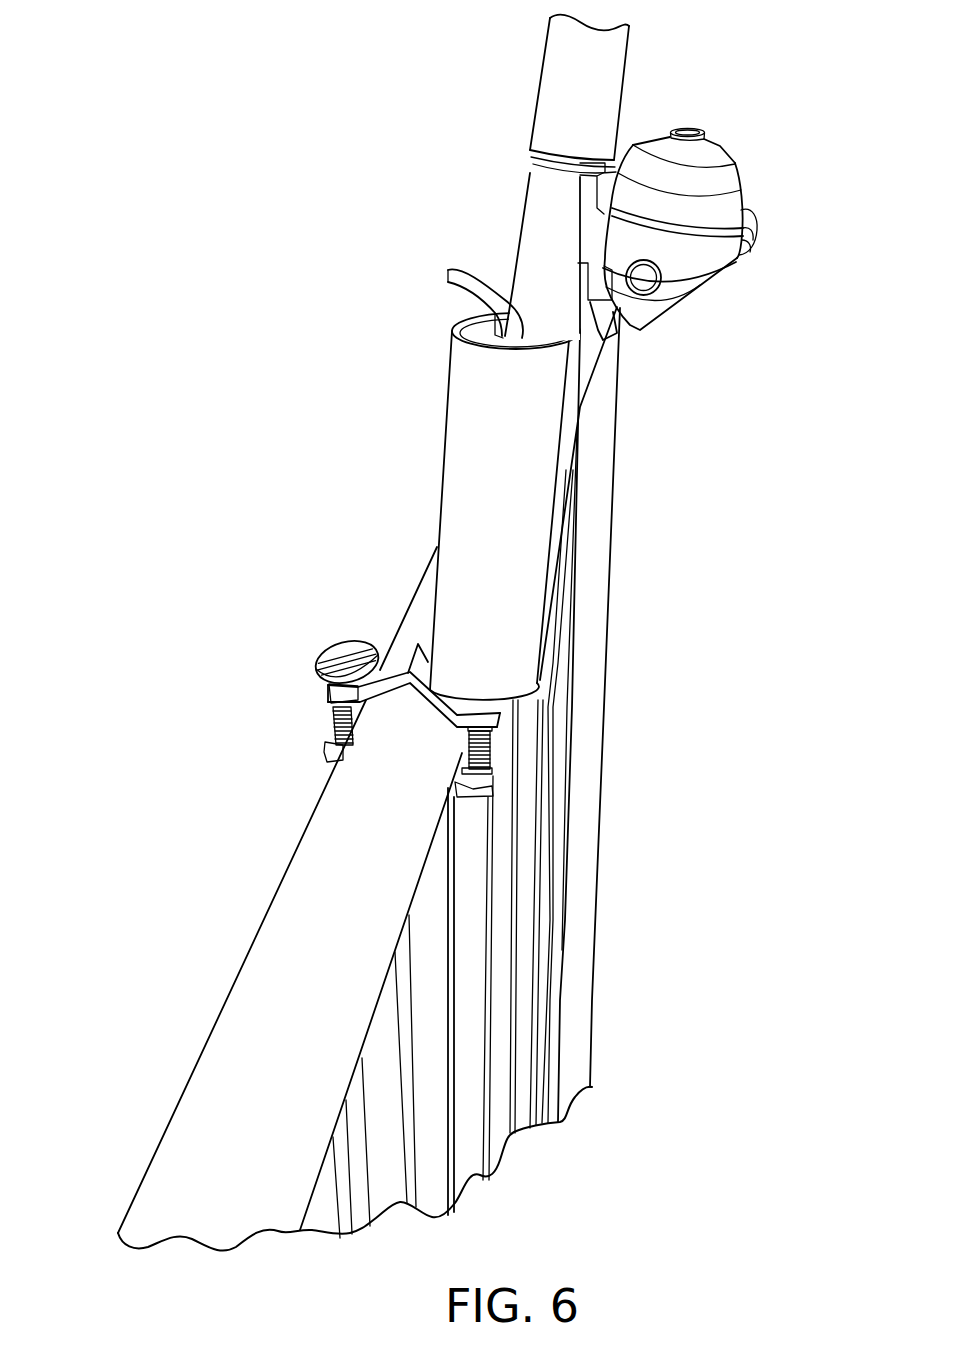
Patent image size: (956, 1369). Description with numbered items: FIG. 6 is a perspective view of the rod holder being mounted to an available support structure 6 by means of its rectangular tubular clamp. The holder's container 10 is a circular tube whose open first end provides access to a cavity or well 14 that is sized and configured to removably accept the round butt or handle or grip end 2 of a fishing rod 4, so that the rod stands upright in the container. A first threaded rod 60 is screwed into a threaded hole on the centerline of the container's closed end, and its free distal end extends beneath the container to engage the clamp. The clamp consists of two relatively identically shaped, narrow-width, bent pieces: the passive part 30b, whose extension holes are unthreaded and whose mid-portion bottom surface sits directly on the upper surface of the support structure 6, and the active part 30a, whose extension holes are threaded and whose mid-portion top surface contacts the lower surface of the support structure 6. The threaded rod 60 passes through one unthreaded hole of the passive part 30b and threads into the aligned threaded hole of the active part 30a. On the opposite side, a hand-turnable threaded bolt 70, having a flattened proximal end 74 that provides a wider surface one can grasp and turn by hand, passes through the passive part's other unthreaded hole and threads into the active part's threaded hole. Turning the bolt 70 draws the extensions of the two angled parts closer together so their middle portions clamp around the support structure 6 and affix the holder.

The butt or handle or grip end 2 is at (513, 287).
The fishing rod 4 is at (548, 91).
The support structure 6 is at (322, 840).
The container 10 is at (456, 465).
The cavity or well 14 is at (463, 312).
The active part 30a is at (457, 787).
The passive part 30b is at (402, 663).
The first threaded rod 60 is at (488, 757).
The hand-turnable threaded bolt 70 is at (336, 733).
The proximal end 74 is at (343, 657).